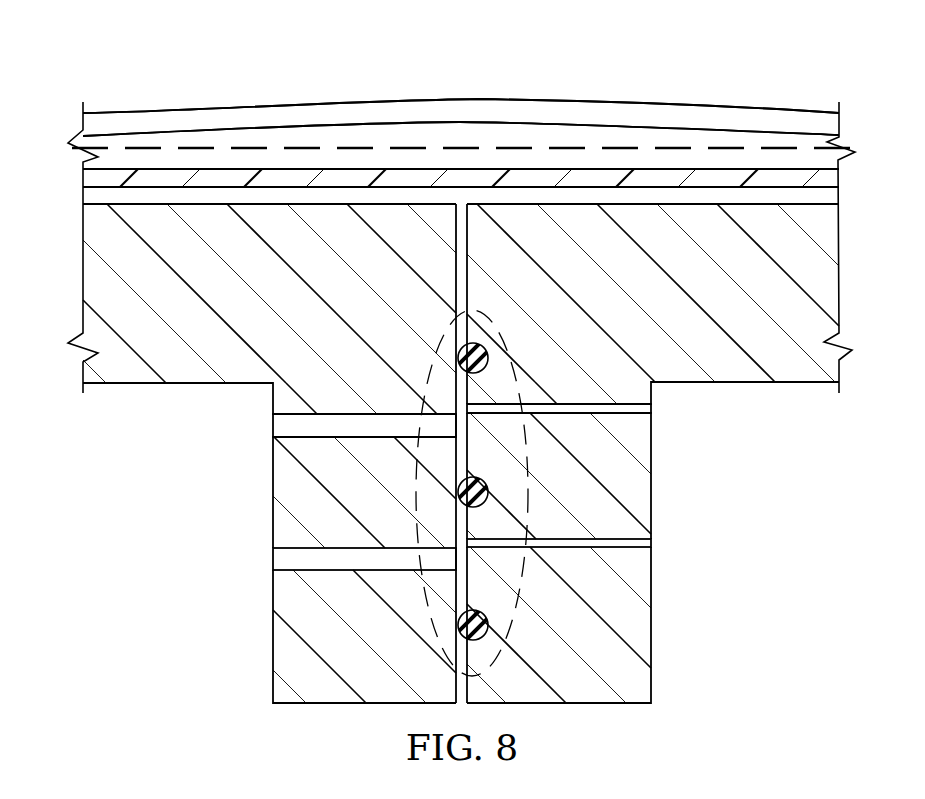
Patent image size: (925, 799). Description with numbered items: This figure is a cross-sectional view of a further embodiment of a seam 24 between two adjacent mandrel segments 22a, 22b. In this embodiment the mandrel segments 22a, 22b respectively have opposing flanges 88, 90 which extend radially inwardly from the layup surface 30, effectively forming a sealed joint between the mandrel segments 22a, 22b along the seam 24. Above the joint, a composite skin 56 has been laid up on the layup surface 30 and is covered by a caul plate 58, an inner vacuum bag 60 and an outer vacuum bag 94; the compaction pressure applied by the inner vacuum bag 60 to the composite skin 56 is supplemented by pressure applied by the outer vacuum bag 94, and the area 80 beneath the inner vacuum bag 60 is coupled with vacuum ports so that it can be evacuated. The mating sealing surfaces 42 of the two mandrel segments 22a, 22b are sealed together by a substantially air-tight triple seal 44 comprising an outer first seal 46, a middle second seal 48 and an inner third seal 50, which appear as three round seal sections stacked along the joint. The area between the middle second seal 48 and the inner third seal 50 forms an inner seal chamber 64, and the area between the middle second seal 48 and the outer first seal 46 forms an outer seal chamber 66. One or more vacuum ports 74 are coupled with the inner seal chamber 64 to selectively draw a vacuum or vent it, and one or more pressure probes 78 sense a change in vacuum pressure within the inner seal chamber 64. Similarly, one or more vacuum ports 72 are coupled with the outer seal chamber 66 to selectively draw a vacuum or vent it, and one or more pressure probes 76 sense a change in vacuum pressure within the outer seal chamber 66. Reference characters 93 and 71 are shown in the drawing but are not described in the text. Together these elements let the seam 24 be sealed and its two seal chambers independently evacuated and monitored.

The seam 24 is at (461, 78).
The outer vacuum bag 94 is at (702, 112).
The inner surface of skin 93 is at (573, 118).
The inner vacuum bag 60 is at (772, 134).
The caul plate 58 is at (256, 148).
The area beneath the inner vacuum bag 80 is at (381, 142).
The composite skin 56 is at (166, 178).
The layup surface 30 is at (83, 194).
The mandrel segment 22a is at (83, 276).
The mandrel segment 22b is at (839, 276).
The sealing surfaces 42 is at (457, 232).
The gap between core segments 71 is at (476, 264).
The inner seal chamber 64 is at (456, 384).
The outer seal chamber 66 is at (456, 594).
The vacuum port 74 is at (273, 426).
The vacuum port 72 is at (273, 560).
The pressure probe 78 is at (651, 426).
The pressure probe 76 is at (651, 560).
The triple seal 44 is at (528, 467).
The flange 88 is at (280, 649).
The flange 90 is at (641, 629).
The inner third seal 50 is at (478, 346).
The middle second seal 48 is at (480, 482).
The outer first seal 46 is at (478, 614).